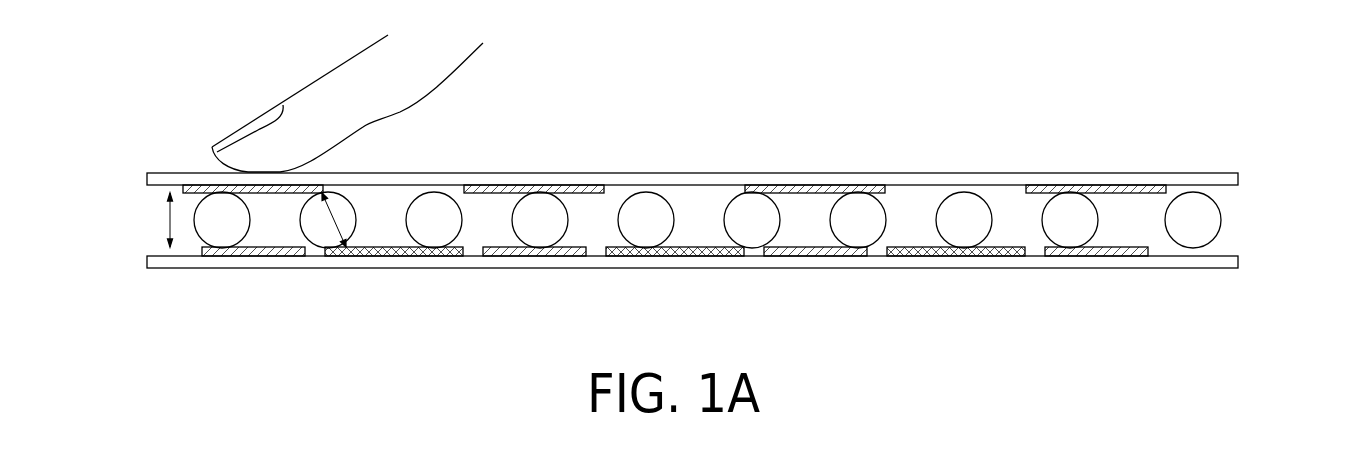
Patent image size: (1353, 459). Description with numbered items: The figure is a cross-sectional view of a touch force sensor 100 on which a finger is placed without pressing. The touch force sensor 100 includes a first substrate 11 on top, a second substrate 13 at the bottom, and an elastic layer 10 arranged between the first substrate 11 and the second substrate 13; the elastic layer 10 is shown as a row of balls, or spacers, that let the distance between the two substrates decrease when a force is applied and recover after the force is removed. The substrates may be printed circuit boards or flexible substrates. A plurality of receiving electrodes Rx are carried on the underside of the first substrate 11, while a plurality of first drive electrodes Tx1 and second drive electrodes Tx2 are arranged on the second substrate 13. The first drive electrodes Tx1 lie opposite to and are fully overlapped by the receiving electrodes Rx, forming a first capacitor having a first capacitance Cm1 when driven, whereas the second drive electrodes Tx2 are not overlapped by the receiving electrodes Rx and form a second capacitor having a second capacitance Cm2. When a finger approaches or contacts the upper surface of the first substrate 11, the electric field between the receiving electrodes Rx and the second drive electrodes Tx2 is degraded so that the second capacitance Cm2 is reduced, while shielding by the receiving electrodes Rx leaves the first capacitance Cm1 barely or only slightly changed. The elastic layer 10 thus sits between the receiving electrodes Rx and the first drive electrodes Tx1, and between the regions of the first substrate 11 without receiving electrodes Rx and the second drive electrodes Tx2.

The touch force sensor 100 is at (171, 90).
The first substrate 11 is at (1239, 178).
The second substrate 13 is at (1239, 263).
The elastic layer 10 is at (1219, 223).
The receiving electrodes Rx is at (557, 190).
The first drive electrodes Tx1 is at (247, 256).
The second drive electrodes Tx2 is at (385, 256).
The first capacitance Cm1 is at (138, 220).
The second capacitance Cm2 is at (362, 220).